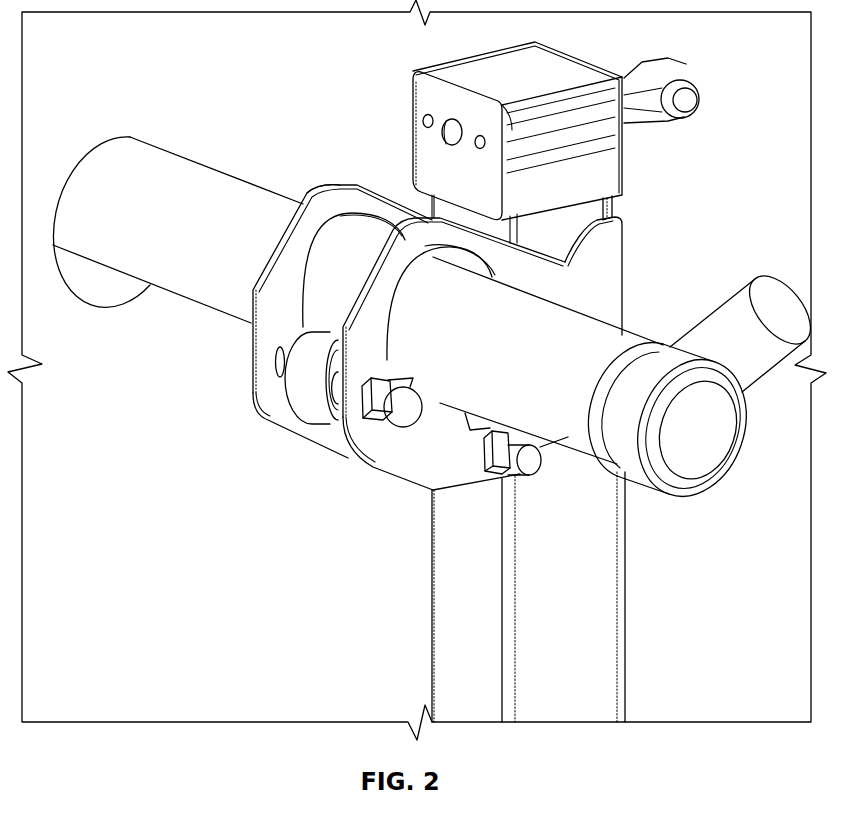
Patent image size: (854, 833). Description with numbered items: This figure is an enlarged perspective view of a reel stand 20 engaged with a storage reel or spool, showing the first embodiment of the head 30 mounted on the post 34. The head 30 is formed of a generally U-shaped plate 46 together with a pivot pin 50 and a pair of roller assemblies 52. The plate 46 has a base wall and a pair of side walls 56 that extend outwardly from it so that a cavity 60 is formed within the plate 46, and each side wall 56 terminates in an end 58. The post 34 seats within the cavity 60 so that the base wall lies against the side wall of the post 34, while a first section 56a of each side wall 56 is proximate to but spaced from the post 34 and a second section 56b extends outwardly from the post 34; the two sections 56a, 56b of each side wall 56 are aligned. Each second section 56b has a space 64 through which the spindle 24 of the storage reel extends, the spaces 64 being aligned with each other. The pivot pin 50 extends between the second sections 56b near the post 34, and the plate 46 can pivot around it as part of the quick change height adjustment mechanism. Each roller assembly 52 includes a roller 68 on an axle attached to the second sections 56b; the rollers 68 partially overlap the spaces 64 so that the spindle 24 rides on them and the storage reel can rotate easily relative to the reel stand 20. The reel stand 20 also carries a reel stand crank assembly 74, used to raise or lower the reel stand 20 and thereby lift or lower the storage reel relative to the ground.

The reel stand 20 is at (665, 286).
The spindle 24 is at (202, 190).
The head 30 is at (306, 505).
The post 34 is at (570, 613).
The U-shaped plate 46 is at (313, 186).
The pivot pin 50 is at (530, 461).
The roller assembly 52 is at (331, 432).
The side wall 56 is at (337, 182).
The first section of side wall 56a is at (577, 277).
The second section of side wall 56b is at (270, 337).
The end of side wall 58 is at (250, 400).
The cavity 60 is at (609, 211).
The space 64 is at (330, 233).
The roller 68 is at (297, 393).
The reel stand crank assembly 74 is at (574, 47).